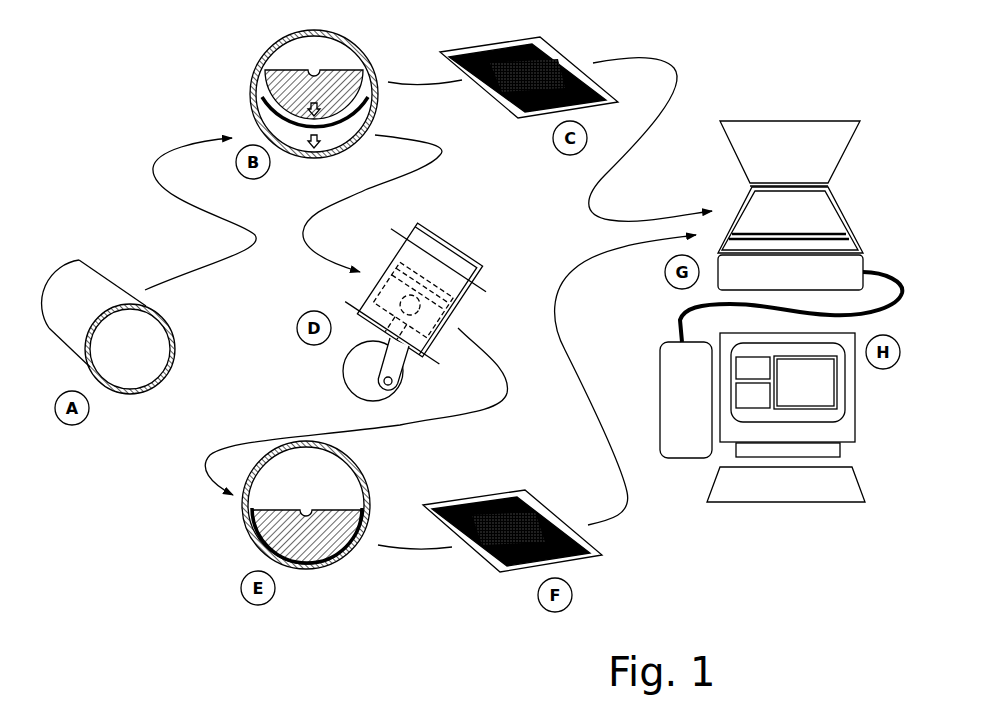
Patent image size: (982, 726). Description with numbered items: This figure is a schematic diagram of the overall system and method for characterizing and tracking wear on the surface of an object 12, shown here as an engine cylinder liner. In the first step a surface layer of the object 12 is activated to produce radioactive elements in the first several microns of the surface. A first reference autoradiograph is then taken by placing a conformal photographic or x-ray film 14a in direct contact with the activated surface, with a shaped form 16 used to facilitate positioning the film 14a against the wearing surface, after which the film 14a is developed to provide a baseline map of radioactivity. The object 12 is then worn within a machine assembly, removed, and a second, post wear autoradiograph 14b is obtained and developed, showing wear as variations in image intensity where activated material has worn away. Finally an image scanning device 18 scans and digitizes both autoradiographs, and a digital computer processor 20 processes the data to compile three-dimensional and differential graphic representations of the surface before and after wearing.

The object 12 is at (60, 329).
The conformal photographic or x-ray film 14a is at (263, 98).
The post wear autoradiograph 14b is at (258, 508).
The shaped form 16 is at (290, 70).
The image scanning device 18 is at (847, 217).
The digital computer processor 20 is at (855, 386).